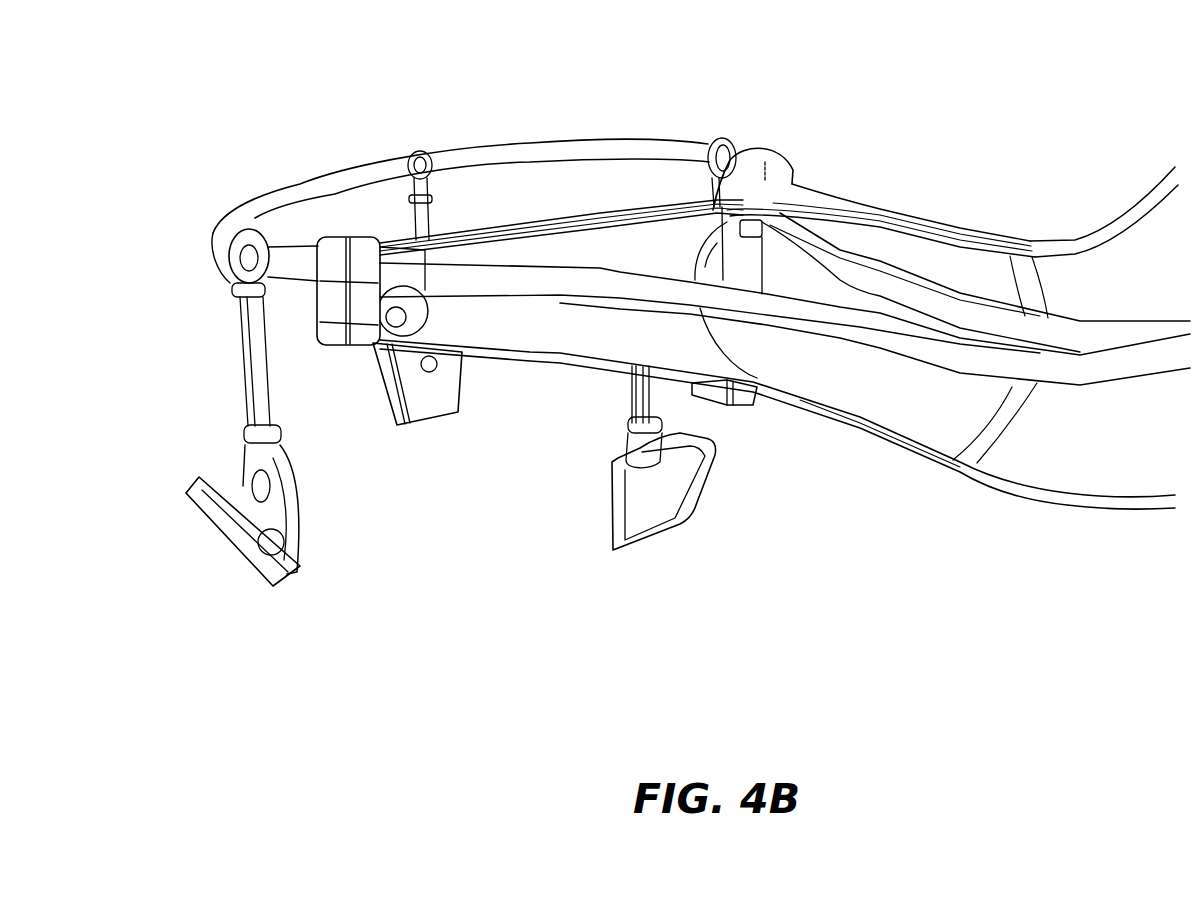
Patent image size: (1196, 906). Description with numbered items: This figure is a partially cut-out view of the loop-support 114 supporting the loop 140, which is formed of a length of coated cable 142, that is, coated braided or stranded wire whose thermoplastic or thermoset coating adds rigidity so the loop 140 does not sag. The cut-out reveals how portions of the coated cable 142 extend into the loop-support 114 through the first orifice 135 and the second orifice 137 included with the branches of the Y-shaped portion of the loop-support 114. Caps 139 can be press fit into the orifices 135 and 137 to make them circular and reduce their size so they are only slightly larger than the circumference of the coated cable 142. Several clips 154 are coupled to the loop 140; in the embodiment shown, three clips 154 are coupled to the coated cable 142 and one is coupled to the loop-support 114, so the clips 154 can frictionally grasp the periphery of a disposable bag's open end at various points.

The loop-support 114 is at (785, 209).
The first orifice 135 is at (776, 133).
The second orifice 137 is at (240, 207).
The cap 139 is at (372, 362).
The loop 140 is at (660, 261).
The coated cable 142 is at (693, 296).
The clip 154 is at (490, 500).